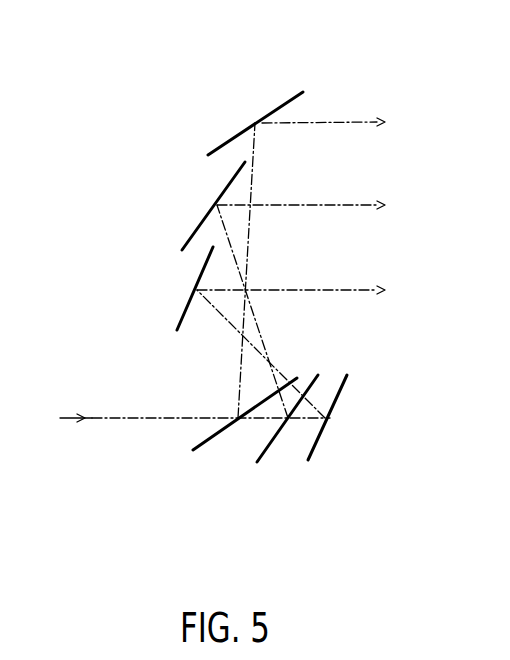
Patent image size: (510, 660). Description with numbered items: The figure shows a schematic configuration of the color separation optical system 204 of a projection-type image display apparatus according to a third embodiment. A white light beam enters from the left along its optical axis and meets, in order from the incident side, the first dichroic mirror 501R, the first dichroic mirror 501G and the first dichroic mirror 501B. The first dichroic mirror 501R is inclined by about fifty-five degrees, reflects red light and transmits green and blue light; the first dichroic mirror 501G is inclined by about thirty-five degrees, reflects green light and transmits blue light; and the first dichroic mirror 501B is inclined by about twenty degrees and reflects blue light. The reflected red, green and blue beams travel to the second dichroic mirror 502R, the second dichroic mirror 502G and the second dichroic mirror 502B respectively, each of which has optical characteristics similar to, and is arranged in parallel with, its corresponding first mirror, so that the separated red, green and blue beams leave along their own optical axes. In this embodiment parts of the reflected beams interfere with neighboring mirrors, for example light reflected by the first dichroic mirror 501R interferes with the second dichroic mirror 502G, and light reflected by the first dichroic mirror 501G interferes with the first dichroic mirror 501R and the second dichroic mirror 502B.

The color separation optical system 204 is at (139, 100).
The second dichroic mirror 502R is at (292, 96).
The second dichroic mirror 502G is at (223, 192).
The second dichroic mirror 502B is at (183, 313).
The first dichroic mirror 501R is at (194, 446).
The first dichroic mirror 501G is at (267, 458).
The first dichroic mirror 501B is at (342, 390).